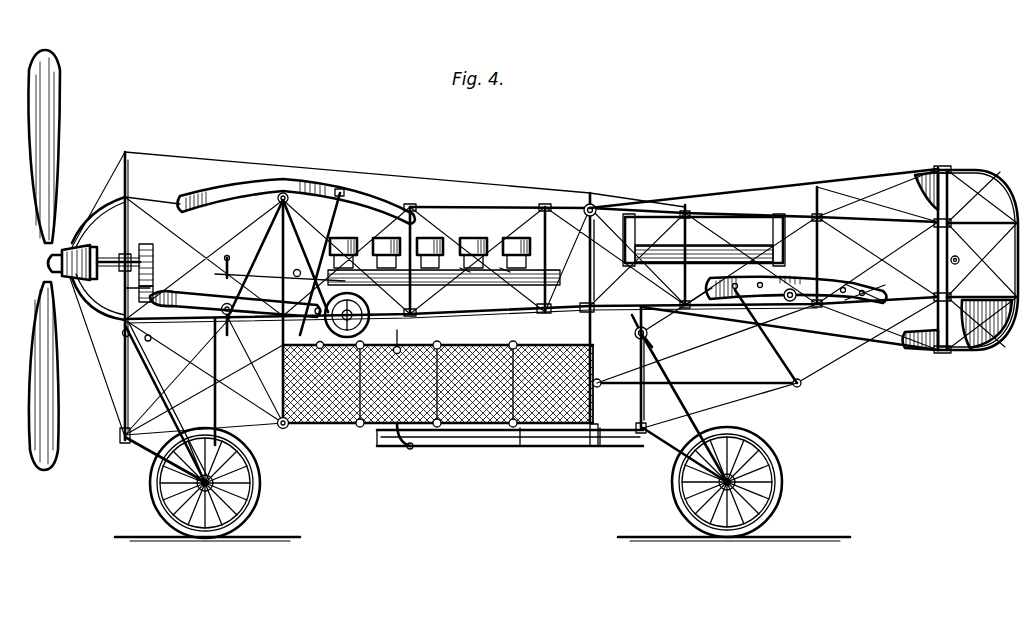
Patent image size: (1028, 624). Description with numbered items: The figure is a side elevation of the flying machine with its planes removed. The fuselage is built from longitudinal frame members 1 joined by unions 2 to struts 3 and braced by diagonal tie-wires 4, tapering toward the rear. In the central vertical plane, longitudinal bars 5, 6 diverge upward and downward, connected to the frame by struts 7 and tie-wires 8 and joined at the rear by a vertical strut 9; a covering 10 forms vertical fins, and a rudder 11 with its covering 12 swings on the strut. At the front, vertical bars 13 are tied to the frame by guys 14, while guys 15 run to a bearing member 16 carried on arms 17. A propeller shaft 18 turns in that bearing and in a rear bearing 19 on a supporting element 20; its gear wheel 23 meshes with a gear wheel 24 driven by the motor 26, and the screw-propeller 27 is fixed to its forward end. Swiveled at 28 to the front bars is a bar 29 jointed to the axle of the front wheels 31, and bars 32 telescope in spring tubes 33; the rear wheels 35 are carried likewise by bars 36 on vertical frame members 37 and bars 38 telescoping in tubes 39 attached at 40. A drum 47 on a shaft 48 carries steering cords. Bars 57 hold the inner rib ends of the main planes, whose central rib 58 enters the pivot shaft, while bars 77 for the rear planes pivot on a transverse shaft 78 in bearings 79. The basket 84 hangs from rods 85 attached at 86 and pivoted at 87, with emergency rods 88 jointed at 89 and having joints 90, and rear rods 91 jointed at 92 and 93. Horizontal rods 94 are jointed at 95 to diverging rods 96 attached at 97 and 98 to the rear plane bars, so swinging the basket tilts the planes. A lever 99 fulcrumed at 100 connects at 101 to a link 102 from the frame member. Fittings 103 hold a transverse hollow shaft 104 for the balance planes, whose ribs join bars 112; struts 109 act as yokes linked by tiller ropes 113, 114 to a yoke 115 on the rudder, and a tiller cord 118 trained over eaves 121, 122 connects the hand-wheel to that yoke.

The longitudinal frame members 1 is at (470, 206).
The unions 2 is at (410, 203).
The struts 3 is at (548, 246).
The diagonal tie-wires 4 is at (213, 246).
The longitudinal bar 5 is at (852, 178).
The longitudinal bar 6 is at (878, 342).
The struts 7 is at (815, 190).
The tie-wires 8 is at (890, 182).
The vertical strut 9 is at (934, 206).
The covering 10 is at (930, 176).
The rudder 11 is at (998, 161).
The covering 12 is at (984, 348).
The vertical bars 13 is at (122, 378).
The guys 14 is at (254, 164).
The guys 15 is at (122, 172).
The bearing member 16 is at (80, 245).
The arms 17 is at (102, 208).
The propeller shaft 18 is at (106, 258).
The bearing 19 is at (133, 254).
The supporting element 20 is at (123, 287).
The gear wheel 23 is at (153, 247).
The gear wheel 24 is at (156, 290).
The motor 26 is at (435, 270).
The screw-propeller 27 is at (41, 200).
The swivel 28 is at (119, 435).
The bar 29 is at (142, 448).
The front wheels 31 is at (152, 494).
The bars 32 is at (155, 396).
The tubes 33 is at (132, 336).
The rear wheels 35 is at (782, 470).
The bars 36 is at (643, 435).
The vertical frame members 37 is at (639, 396).
The bars 38 is at (696, 424).
The tubes 39 is at (648, 335).
The attachment point 40 is at (634, 334).
The drum 47 is at (400, 346).
The shaft 48 is at (338, 332).
The bars 57 is at (362, 188).
The central rib 58 is at (287, 192).
The bars 77 is at (828, 283).
The transverse shaft 78 is at (795, 283).
The bearings 79 is at (746, 330).
The basket 84 is at (496, 346).
The rods 85 is at (255, 200).
The attachment point 86 is at (212, 197).
The pivot connection 87 is at (283, 430).
The emergency suspension rods 88 is at (294, 270).
The joint 89 is at (270, 365).
The joints 90 is at (285, 275).
The rods 91 is at (594, 238).
The joint 92 is at (592, 203).
The joint 93 is at (594, 447).
The horizontal rods 94 is at (757, 387).
The joint 95 is at (600, 380).
The diverging rods 96 is at (806, 354).
The attachment point 97 is at (730, 234).
The attachment point 98 is at (852, 291).
The lever 99 is at (326, 346).
The fulcrum 100 is at (379, 440).
The joint 101 is at (409, 450).
The link 102 is at (540, 446).
The fittings 103 is at (213, 348).
The transverse hollow shaft 104 is at (220, 320).
The struts 109 is at (240, 268).
The bars 112 is at (215, 293).
The tiller rope 113 is at (352, 233).
The tiller rope 114 is at (262, 352).
The yoke 115 is at (960, 258).
The tiller cord 118 is at (400, 284).
The eave 121 is at (475, 272).
The eave 122 is at (541, 313).